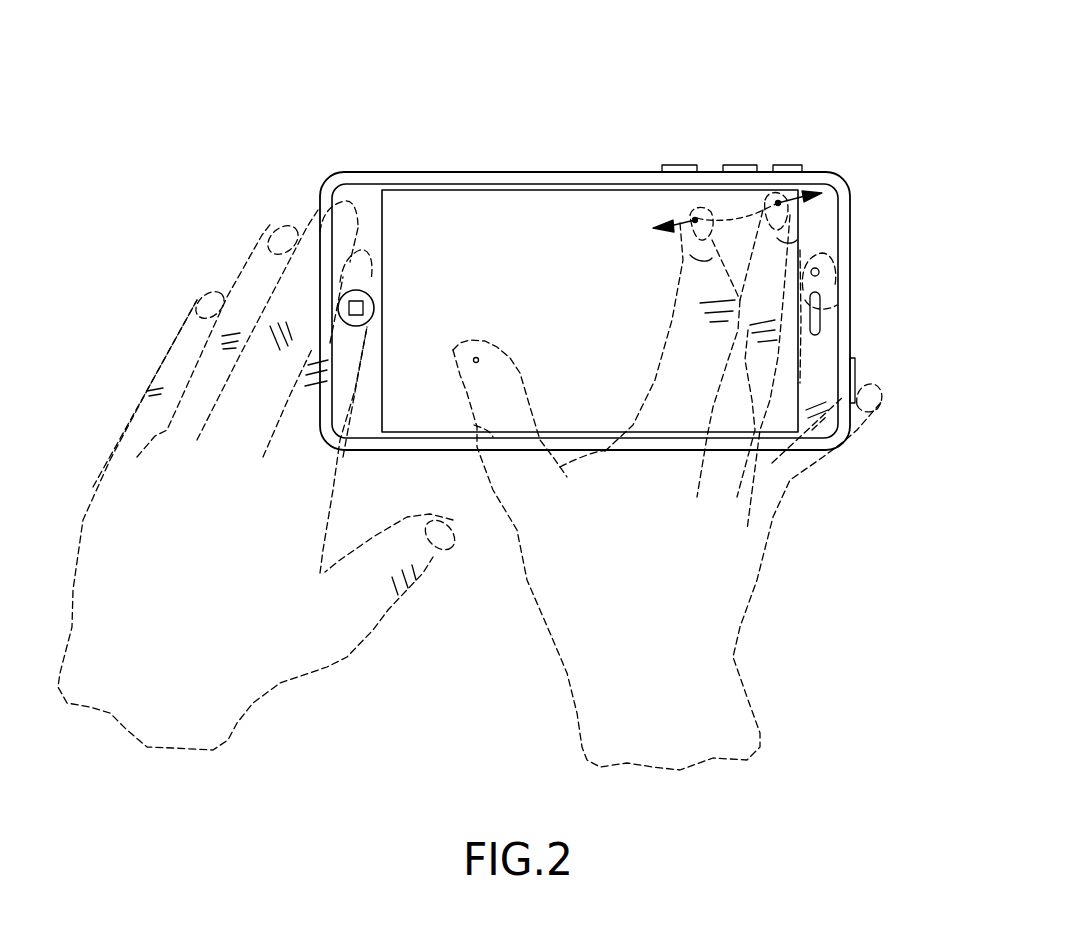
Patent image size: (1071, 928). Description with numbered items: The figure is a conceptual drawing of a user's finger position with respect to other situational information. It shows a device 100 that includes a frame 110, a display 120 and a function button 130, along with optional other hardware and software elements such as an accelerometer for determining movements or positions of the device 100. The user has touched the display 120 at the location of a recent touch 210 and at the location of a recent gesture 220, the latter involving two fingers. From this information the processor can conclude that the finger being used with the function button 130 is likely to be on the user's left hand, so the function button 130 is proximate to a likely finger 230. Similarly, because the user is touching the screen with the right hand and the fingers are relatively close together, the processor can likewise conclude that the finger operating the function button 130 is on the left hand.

The device 100 is at (813, 90).
The frame 110 is at (470, 172).
The display 120 is at (576, 200).
The function button 130 is at (375, 307).
The recent touch 210 is at (478, 358).
The recent gesture 220 is at (718, 222).
The likely finger 230 is at (373, 375).